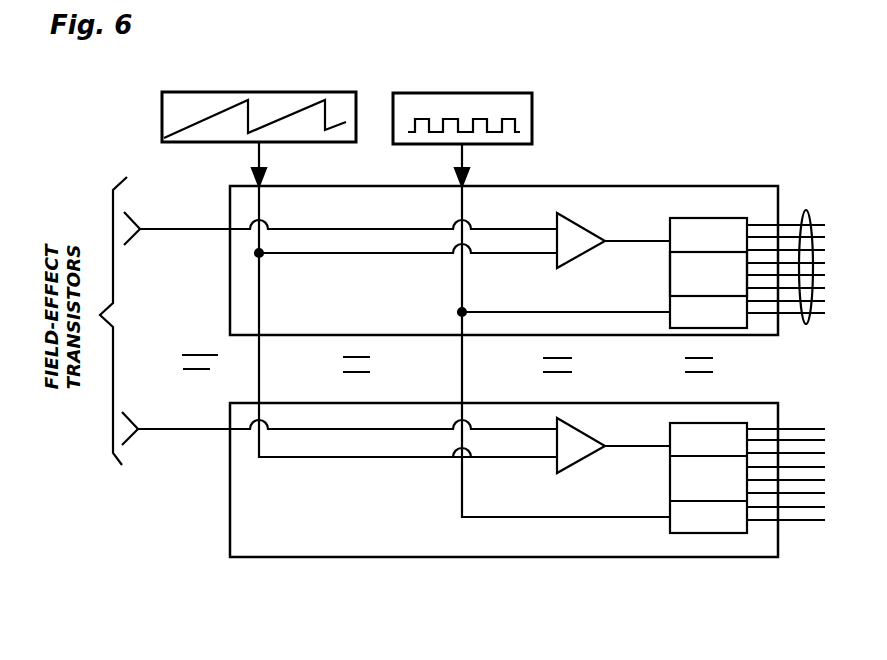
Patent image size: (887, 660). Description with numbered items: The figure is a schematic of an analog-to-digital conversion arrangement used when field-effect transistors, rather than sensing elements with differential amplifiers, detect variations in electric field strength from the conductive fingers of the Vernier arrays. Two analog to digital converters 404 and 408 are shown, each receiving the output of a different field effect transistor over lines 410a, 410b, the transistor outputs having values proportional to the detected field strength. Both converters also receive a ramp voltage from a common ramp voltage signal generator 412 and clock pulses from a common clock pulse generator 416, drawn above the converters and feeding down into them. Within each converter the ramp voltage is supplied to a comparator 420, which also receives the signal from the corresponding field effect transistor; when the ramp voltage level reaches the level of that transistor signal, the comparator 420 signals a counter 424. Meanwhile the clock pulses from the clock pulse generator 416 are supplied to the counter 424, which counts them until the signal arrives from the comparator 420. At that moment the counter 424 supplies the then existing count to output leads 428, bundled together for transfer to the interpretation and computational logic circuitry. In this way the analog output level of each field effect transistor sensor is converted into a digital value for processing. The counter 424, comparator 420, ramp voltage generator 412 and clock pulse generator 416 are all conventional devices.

The analog to digital converter 404 is at (527, 316).
The analog to digital converter 408 is at (692, 557).
The line 410a is at (189, 229).
The line 410b is at (185, 429).
The ramp voltage signal generator 412 is at (258, 92).
The clock pulse generator 416 is at (470, 93).
The comparator 420 is at (580, 238).
The counter 424 is at (670, 267).
The output leads 428 is at (805, 210).